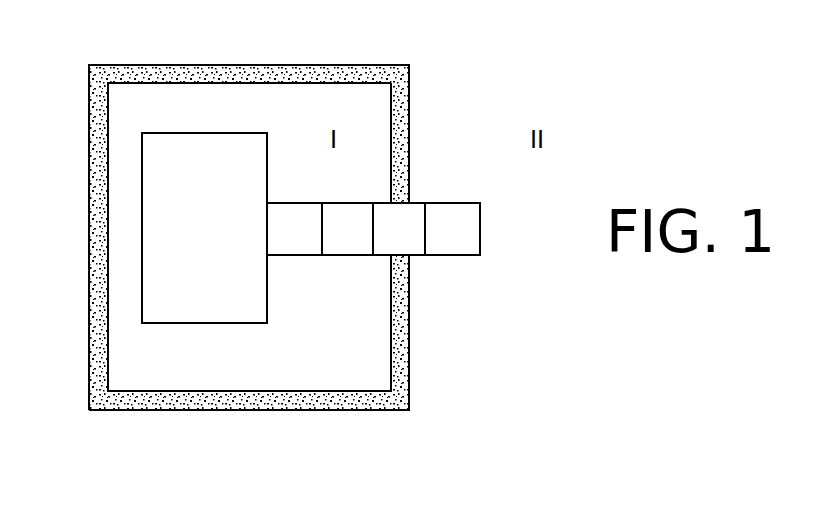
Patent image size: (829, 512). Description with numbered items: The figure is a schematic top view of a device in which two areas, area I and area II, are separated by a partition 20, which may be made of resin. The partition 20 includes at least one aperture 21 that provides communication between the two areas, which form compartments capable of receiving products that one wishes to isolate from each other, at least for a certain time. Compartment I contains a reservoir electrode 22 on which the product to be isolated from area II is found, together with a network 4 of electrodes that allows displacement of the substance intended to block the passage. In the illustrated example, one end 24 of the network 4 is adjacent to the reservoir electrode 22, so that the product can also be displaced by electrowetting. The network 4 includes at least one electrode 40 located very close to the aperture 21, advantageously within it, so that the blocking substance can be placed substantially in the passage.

The partition 20 is at (400, 109).
The reservoir electrode 22 is at (165, 252).
The end of the network 24 is at (283, 217).
The aperture 21 is at (411, 215).
The electrode 40 is at (410, 232).
The network of electrodes 4 is at (420, 256).